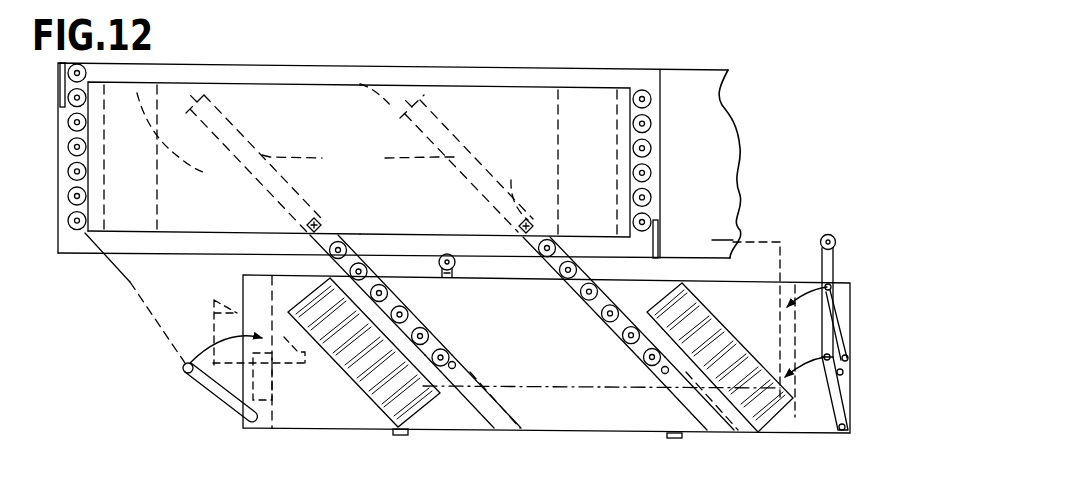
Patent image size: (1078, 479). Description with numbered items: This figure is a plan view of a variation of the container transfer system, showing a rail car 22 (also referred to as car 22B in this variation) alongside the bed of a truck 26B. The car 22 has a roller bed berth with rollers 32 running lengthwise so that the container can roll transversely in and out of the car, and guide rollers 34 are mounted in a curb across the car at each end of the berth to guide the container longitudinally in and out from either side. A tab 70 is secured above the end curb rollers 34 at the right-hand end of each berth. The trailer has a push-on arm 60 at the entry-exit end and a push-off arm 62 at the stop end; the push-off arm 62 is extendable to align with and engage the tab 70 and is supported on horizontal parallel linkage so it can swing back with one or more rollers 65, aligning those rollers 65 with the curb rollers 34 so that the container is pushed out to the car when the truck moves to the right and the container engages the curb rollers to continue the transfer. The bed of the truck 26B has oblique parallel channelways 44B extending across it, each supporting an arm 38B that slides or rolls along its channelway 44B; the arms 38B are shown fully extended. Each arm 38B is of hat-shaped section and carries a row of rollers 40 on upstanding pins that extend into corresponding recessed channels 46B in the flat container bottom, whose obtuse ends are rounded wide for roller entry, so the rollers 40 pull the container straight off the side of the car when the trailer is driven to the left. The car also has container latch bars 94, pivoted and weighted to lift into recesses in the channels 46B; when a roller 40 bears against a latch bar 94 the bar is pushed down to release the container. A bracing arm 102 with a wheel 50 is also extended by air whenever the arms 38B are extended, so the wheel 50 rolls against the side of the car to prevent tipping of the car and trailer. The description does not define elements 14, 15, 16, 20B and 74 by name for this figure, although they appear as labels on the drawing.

The first conveyor section 14 is at (434, 61).
The second conveyor section 15 is at (592, 216).
The lower conveyor unit 16 is at (758, 462).
The upper conveyor deck 20B is at (305, 84).
The car 22 is at (657, 168).
The car 22B is at (453, 68).
The truck 26B is at (347, 420).
The rollers 32 is at (150, 78).
The guide rollers 34 is at (650, 146).
The arm 38B is at (640, 358).
The rollers 40 is at (620, 340).
The channelway 44B is at (504, 437).
The recessed channels 46B is at (358, 158).
The wheel 50 is at (453, 235).
The push-on arm 60 is at (211, 392).
The push-off arm 62 is at (834, 255).
The rollers 65 is at (794, 256).
The tab 70 is at (58, 86).
The mounting tab 74 is at (410, 434).
The container latch bars 94 is at (203, 172).
The bracing arm 102 is at (440, 272).